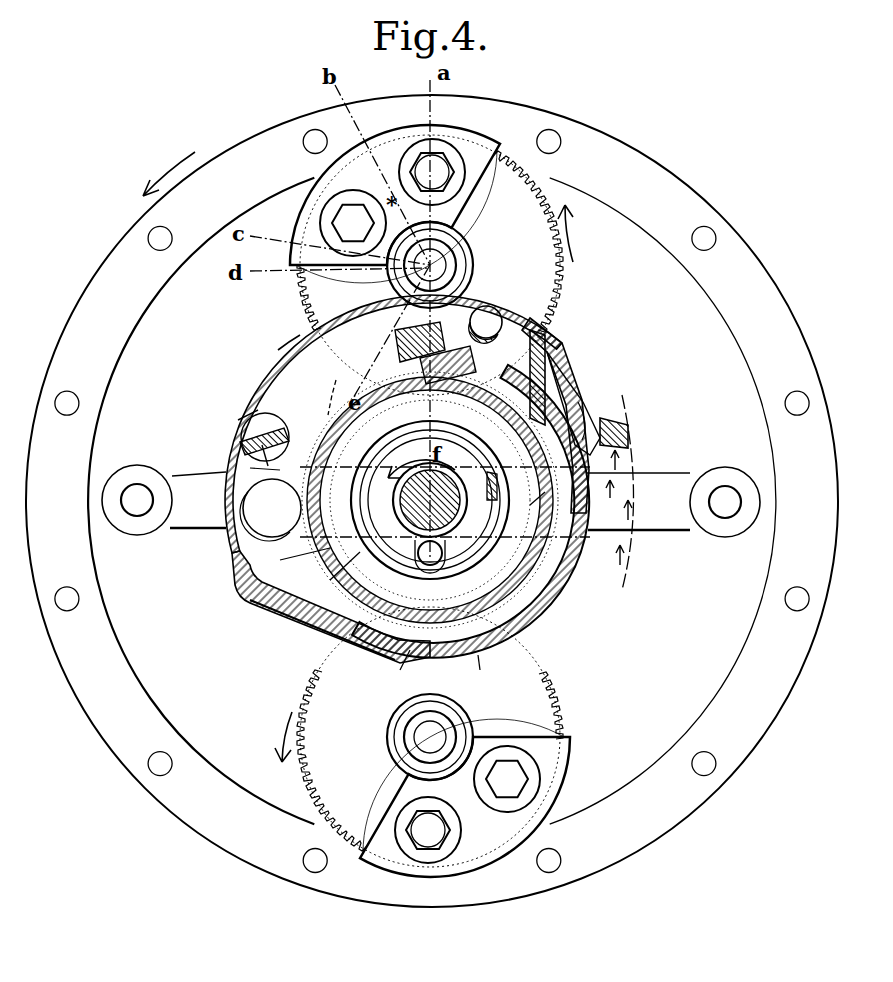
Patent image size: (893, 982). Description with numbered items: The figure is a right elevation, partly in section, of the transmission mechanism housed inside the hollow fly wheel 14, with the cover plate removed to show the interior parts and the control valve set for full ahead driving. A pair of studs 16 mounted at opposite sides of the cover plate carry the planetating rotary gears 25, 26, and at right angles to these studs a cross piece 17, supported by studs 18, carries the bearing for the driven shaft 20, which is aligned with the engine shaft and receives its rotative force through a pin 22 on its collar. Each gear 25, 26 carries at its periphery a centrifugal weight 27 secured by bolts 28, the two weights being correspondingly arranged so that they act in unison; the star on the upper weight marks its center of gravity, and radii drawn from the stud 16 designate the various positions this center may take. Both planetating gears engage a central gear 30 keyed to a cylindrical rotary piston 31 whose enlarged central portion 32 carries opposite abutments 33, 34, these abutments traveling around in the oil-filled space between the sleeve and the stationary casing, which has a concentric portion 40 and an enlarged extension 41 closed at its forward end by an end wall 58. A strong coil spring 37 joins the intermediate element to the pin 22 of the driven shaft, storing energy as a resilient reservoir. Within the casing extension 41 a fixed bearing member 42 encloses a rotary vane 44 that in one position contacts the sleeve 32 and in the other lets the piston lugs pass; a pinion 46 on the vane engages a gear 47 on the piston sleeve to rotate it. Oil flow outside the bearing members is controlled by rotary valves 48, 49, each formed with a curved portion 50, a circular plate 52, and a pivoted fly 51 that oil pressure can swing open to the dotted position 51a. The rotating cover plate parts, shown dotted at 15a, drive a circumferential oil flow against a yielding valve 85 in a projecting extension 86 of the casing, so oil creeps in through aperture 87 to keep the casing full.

The fly wheel 14 is at (432, 501).
The rotating cover plate parts 15a is at (650, 550).
The studs 16 is at (455, 262).
The cross piece 17 is at (164, 500).
The studs 18 is at (140, 505).
The driven shaft 20 is at (450, 497).
The pin 22 is at (430, 565).
The rotary gear 25 is at (430, 737).
The rotary gear 26 is at (430, 265).
The centrifugal weight 27 is at (475, 165).
The bolts 28 is at (430, 501).
The central gear 30 is at (540, 568).
The rotary piston 31 is at (330, 598).
The enlarged central portion 32 is at (350, 605).
The abutment 33 is at (372, 372).
The abutment 34 is at (397, 673).
The coil spring 37 is at (440, 543).
The concentric casing portion 40 is at (482, 675).
The casing extension 41 is at (262, 392).
The stationary bearing member 42 is at (492, 312).
The rotary vane 44 is at (390, 342).
The pinion 46 is at (490, 286).
The gear 47 is at (303, 567).
The rotary valve 48 is at (548, 330).
The rotary valve 49 is at (270, 425).
The curved portion 50 is at (288, 438).
The fly 51 is at (240, 438).
The fly in open position 51a is at (250, 462).
The circular plate 52 is at (250, 418).
The end wall 58 is at (290, 368).
The yielding valve 85 is at (612, 420).
The projecting extension 86 is at (586, 400).
The aperture 87 is at (548, 370).